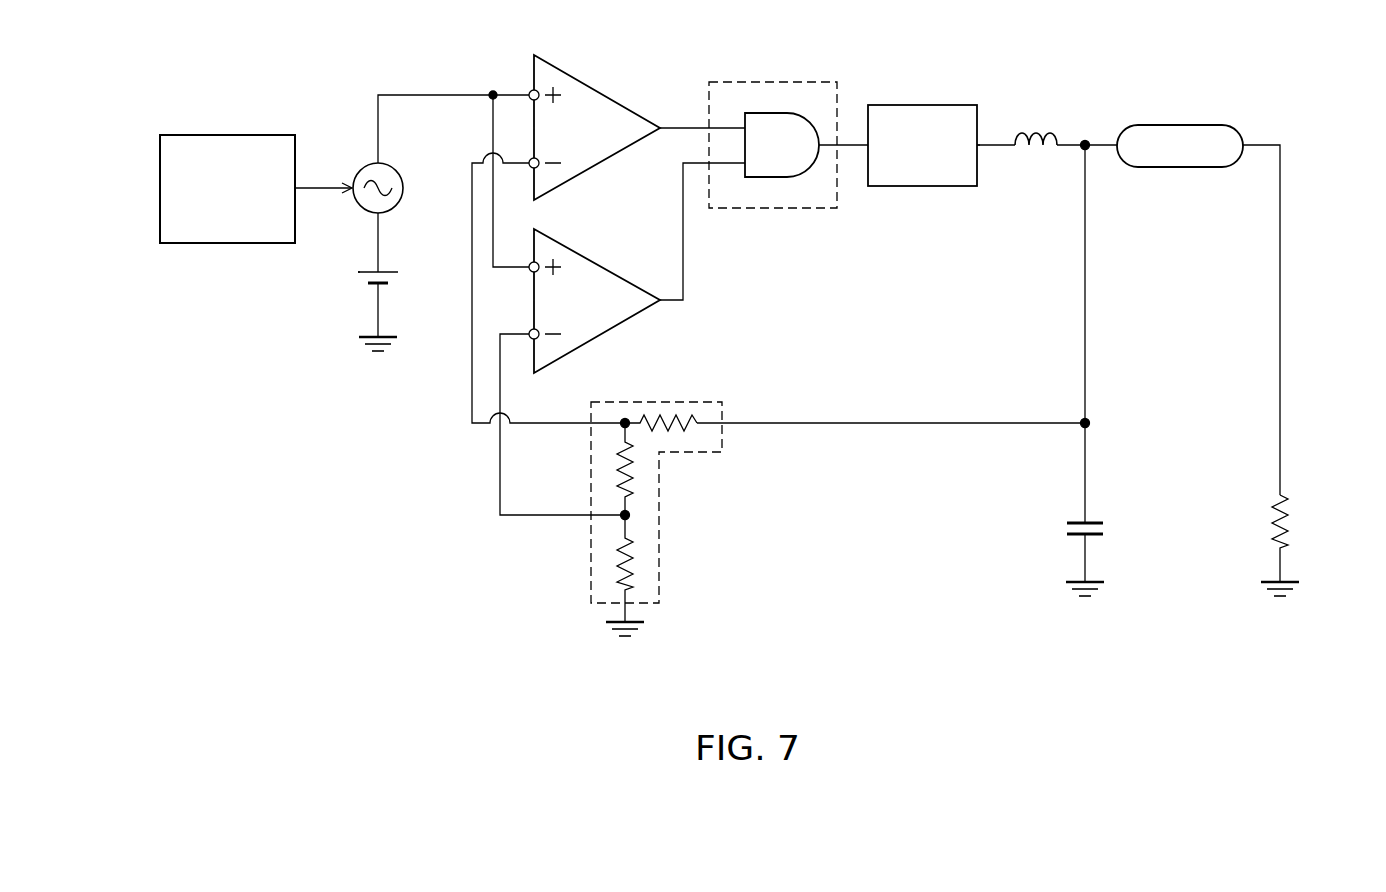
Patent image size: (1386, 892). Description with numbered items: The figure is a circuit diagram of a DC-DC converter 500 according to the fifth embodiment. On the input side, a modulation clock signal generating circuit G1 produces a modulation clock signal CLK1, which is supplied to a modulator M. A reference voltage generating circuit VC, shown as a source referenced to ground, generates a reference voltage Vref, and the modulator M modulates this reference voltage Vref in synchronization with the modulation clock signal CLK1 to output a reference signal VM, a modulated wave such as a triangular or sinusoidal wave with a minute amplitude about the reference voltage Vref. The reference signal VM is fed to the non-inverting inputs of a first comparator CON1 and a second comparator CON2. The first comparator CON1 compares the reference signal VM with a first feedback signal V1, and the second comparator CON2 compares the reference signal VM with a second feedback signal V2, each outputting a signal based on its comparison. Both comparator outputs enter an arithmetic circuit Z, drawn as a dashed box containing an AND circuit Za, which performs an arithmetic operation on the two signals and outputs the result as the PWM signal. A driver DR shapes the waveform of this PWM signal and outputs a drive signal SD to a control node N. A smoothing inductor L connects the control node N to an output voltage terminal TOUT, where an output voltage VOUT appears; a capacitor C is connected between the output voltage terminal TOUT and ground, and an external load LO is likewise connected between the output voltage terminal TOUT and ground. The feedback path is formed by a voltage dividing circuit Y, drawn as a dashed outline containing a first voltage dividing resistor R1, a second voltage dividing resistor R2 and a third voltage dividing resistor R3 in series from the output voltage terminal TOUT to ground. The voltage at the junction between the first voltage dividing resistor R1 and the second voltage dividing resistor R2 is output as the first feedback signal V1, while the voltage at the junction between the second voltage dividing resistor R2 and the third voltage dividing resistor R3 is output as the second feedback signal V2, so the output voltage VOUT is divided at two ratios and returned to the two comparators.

The DC-DC converter 500 is at (775, 690).
The modulation clock signal generating circuit G1 is at (231, 135).
The modulation clock signal CLK1 is at (324, 177).
The modulator M is at (403, 190).
The reference voltage generating circuit VC is at (390, 271).
The reference voltage Vref is at (326, 282).
The reference signal VM is at (510, 167).
The first feedback signal V1 is at (548, 279).
The second feedback signal V2 is at (562, 412).
The first comparator CON1 is at (596, 85).
The second comparator CON2 is at (596, 258).
The arithmetic circuit Z is at (794, 78).
The AND circuit Za is at (768, 113).
The driver DR is at (923, 105).
The control node N is at (996, 145).
The drive signal SD is at (995, 161).
The smoothing inductor L is at (1036, 132).
The output voltage terminal TOUT is at (1180, 125).
The output voltage VOUT is at (1275, 308).
The first voltage dividing resistor R1 is at (662, 420).
The second voltage dividing resistor R2 is at (630, 468).
The third voltage dividing resistor R3 is at (630, 560).
The voltage dividing circuit Y is at (660, 514).
The capacitor C is at (1093, 521).
The external load LO is at (1282, 500).